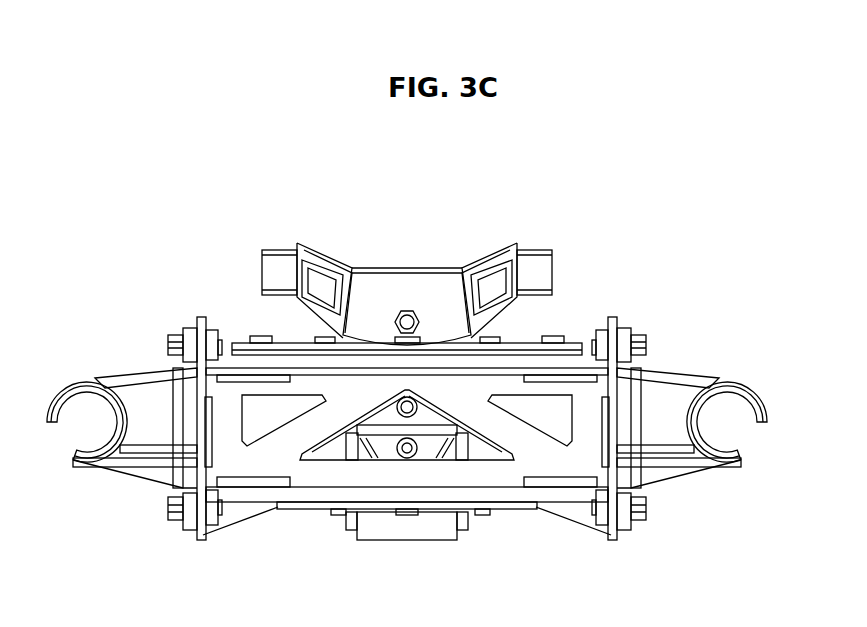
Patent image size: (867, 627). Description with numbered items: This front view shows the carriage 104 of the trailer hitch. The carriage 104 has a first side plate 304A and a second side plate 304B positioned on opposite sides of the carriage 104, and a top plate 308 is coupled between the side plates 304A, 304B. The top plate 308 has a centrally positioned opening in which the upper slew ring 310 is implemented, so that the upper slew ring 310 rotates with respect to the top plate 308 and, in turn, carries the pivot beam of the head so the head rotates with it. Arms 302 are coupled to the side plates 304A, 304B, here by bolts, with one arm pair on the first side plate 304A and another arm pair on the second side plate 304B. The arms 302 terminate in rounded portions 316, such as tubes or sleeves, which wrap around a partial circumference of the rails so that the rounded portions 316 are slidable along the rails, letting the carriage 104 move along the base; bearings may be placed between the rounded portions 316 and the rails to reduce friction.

The carriage 104 is at (121, 116).
The arms 302 is at (147, 370).
The first side plate 304A is at (198, 318).
The second side plate 304B is at (607, 318).
The top plate 308 is at (238, 352).
The upper slew ring 310 is at (527, 345).
The rounded portions 316 is at (68, 460).